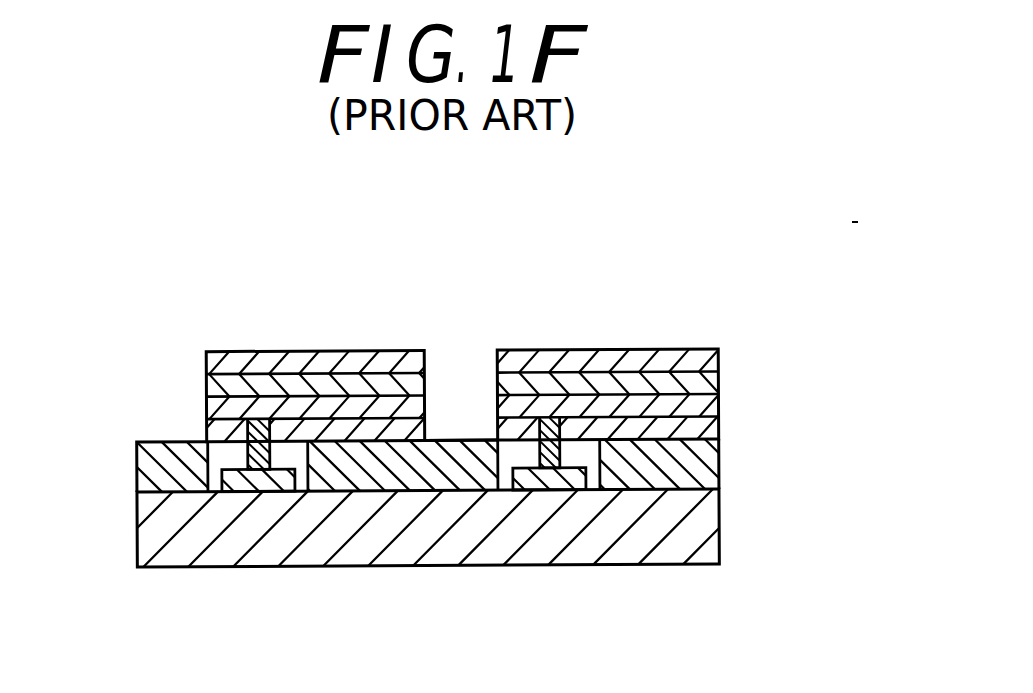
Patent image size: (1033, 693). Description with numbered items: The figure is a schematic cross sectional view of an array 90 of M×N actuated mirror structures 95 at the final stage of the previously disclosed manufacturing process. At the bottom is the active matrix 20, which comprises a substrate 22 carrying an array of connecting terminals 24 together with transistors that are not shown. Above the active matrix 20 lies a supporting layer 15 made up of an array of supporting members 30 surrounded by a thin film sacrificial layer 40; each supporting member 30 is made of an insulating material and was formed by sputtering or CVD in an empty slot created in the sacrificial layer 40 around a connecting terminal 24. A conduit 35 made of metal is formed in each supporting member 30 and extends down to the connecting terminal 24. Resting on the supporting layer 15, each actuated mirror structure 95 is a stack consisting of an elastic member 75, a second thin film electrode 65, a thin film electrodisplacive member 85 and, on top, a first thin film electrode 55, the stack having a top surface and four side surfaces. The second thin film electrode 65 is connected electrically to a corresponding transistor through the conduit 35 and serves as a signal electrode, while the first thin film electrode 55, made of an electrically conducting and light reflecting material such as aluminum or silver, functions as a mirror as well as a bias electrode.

The array of actuated mirror structures 90 is at (813, 153).
The actuated mirror structure 95 is at (425, 231).
The active matrix 20 is at (122, 473).
The substrate 22 is at (388, 553).
The connecting terminal 24 is at (262, 487).
The thin film sacrificial layer 40 is at (700, 462).
The supporting member 30 is at (293, 452).
The conduit 35 is at (263, 420).
The supporting layer 15 is at (440, 467).
The first thin film electrode 55 is at (697, 352).
The thin film electrodisplacive member 85 is at (700, 383).
The second thin film electrode 65 is at (700, 405).
The elastic member 75 is at (700, 428).